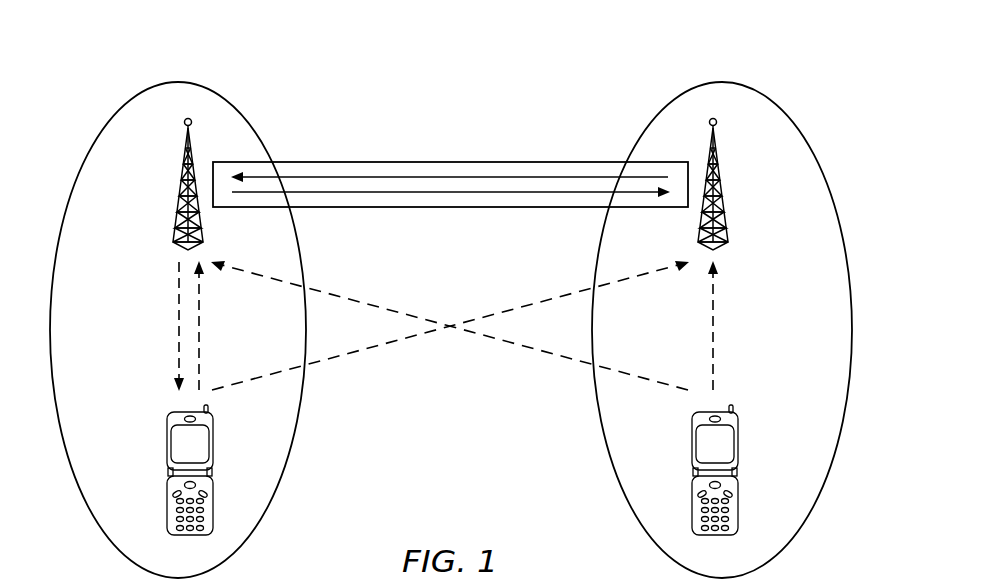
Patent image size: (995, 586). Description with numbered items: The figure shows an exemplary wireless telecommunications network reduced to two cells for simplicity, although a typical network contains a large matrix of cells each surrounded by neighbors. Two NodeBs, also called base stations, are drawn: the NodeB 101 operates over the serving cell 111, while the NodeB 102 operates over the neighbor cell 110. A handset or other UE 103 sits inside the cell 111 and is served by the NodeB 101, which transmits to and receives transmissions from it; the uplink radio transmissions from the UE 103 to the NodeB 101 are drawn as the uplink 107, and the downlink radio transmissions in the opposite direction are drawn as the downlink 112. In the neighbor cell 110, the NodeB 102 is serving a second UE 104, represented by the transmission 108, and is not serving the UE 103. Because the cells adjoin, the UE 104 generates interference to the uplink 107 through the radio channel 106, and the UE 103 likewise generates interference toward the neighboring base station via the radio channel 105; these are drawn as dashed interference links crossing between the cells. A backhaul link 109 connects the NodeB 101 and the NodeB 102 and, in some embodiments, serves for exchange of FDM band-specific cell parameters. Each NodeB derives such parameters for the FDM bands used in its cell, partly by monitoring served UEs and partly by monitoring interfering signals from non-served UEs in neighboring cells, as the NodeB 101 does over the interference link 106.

The NodeB 101 is at (178, 196).
The NodeB 102 is at (723, 196).
The UE 103 is at (167, 440).
The UE 104 is at (738, 440).
The radio channel (interference link) 105 is at (349, 355).
The radio channel (interference link) 106 is at (536, 350).
The uplink radio transmissions 107 is at (200, 332).
The transmission 108 is at (714, 332).
The backhaul link 109 is at (501, 161).
The cell 110 is at (784, 103).
The cell 111 is at (114, 103).
The downlink radio transmissions 112 is at (178, 318).